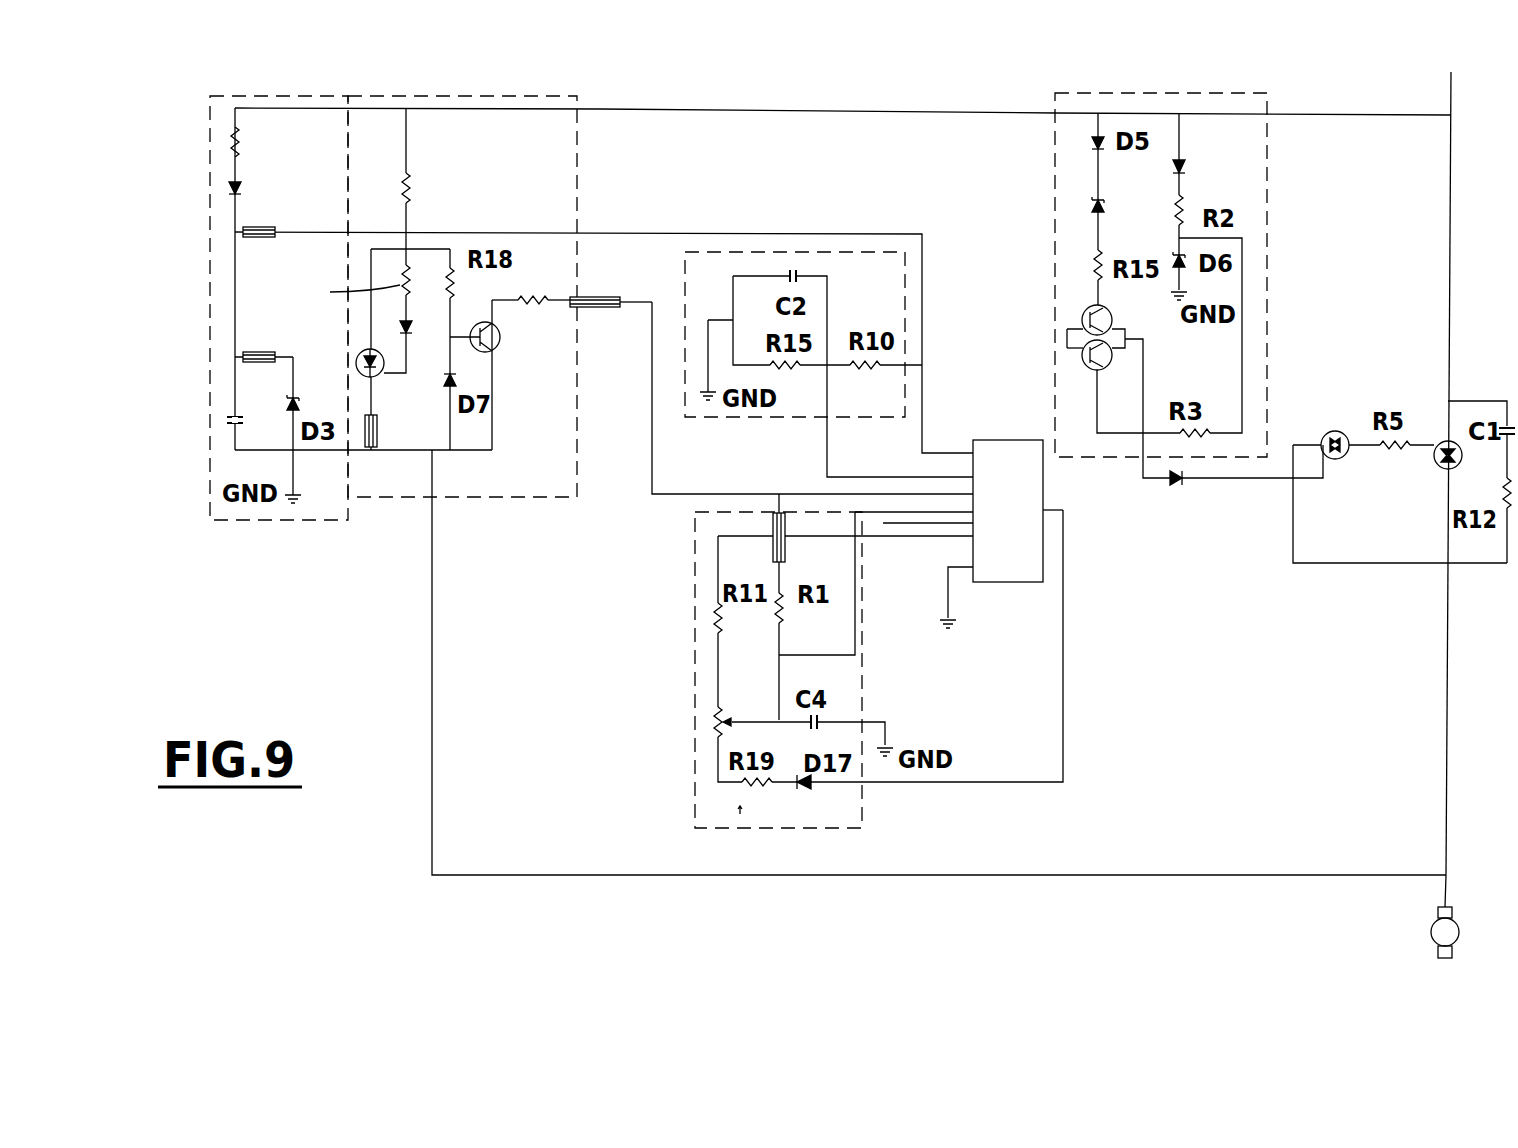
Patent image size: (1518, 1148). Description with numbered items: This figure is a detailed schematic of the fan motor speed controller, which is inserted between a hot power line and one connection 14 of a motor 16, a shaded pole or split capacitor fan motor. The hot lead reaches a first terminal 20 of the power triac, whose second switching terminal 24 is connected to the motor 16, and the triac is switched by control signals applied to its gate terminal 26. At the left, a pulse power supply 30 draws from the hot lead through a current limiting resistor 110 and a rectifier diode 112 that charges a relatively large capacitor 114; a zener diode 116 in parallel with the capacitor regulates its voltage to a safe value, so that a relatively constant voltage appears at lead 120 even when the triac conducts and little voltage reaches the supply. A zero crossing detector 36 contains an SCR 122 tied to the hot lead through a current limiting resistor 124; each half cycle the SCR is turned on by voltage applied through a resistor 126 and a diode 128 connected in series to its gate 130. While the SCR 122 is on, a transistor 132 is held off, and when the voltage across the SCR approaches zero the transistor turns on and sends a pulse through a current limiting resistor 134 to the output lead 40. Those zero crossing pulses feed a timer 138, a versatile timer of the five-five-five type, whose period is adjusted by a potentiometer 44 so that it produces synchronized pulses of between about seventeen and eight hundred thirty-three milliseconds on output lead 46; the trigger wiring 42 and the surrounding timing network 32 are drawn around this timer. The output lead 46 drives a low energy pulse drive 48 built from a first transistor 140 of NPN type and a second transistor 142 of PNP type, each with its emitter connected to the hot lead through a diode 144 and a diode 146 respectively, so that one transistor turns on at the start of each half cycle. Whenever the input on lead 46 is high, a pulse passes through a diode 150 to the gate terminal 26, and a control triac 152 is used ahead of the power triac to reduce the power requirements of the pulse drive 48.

The connection 14 is at (1444, 900).
The motor 16 is at (1431, 938).
The first terminal 20 is at (1450, 366).
The second switching terminal 24 is at (1447, 722).
The gate terminal 26 is at (1437, 443).
The pulse power supply 30 is at (272, 522).
The timer circuit 32 is at (695, 553).
The zero crossing detector 36 is at (577, 150).
The output lead 40 is at (646, 272).
The trigger line 42 is at (680, 495).
The potentiometer 44 is at (712, 728).
The output lead 46 is at (1064, 720).
The low energy pulse drive 48 is at (1267, 177).
The current limiting resistor 110 is at (235, 142).
The rectifier diode 112 is at (235, 199).
The capacitor 114 is at (233, 420).
The zener diode 116 is at (283, 339).
The lead 120 is at (275, 237).
The SCR 122 is at (372, 380).
The current limiting resistor 124 is at (410, 180).
The resistor 126 is at (400, 276).
The diode 128 is at (408, 318).
The gate 130 is at (377, 373).
The transistor 132 is at (500, 351).
The current limiting resistor 134 is at (523, 298).
The timer 138 is at (983, 440).
The first transistor 140 is at (1082, 360).
The second transistor 142 is at (1082, 326).
The diode 144 is at (1182, 160).
The diode 146 is at (1095, 206).
The diode 150 is at (1176, 481).
The control triac 152 is at (1336, 431).